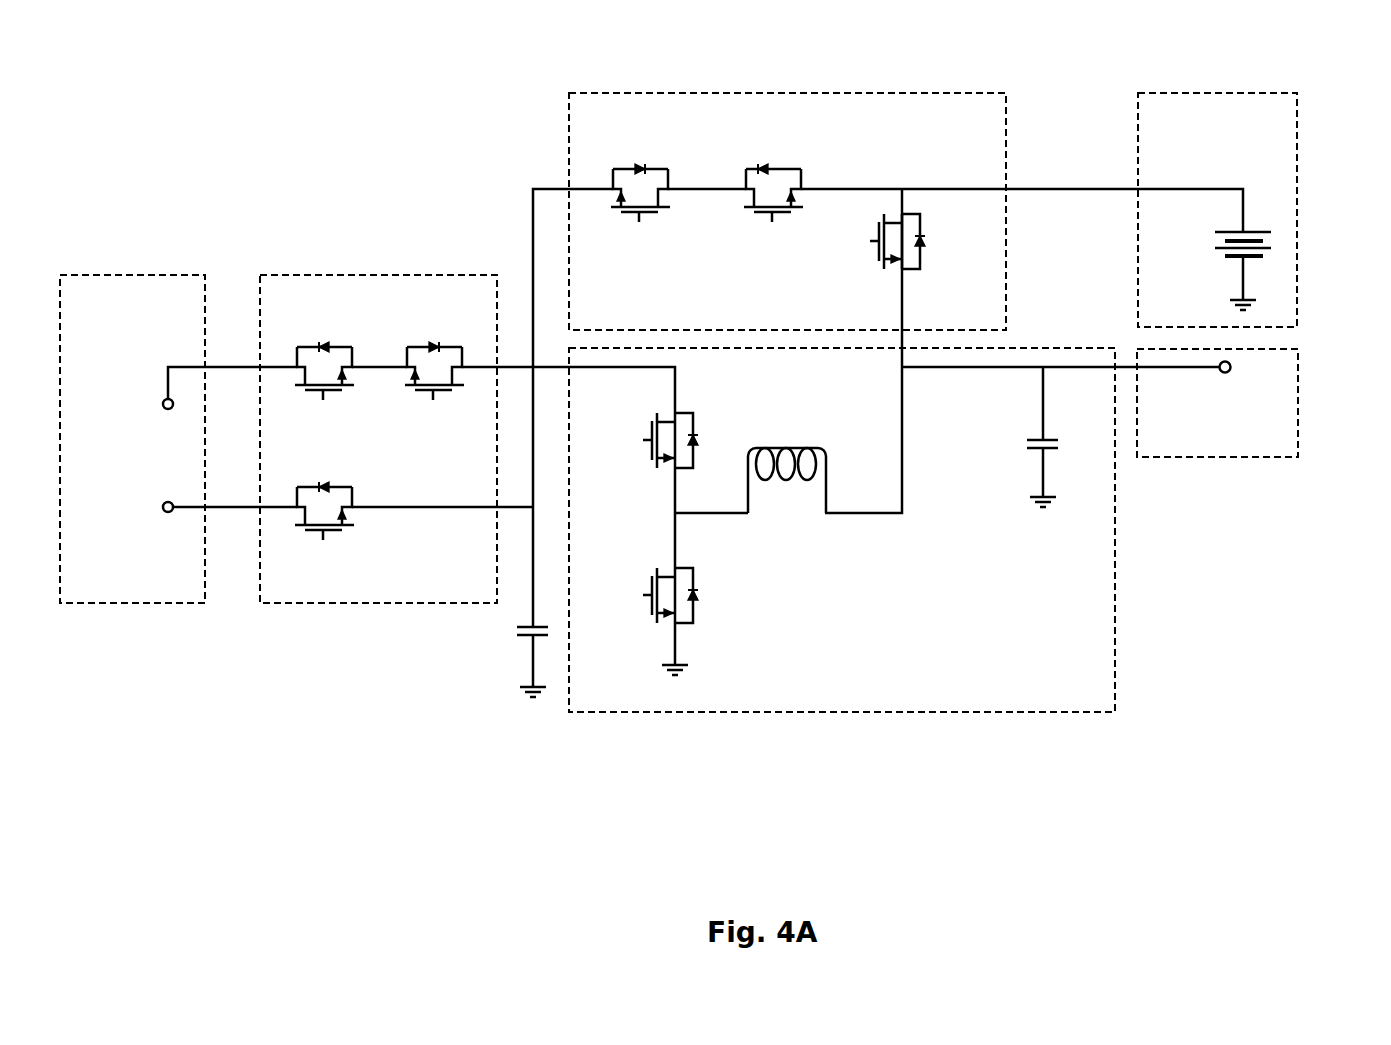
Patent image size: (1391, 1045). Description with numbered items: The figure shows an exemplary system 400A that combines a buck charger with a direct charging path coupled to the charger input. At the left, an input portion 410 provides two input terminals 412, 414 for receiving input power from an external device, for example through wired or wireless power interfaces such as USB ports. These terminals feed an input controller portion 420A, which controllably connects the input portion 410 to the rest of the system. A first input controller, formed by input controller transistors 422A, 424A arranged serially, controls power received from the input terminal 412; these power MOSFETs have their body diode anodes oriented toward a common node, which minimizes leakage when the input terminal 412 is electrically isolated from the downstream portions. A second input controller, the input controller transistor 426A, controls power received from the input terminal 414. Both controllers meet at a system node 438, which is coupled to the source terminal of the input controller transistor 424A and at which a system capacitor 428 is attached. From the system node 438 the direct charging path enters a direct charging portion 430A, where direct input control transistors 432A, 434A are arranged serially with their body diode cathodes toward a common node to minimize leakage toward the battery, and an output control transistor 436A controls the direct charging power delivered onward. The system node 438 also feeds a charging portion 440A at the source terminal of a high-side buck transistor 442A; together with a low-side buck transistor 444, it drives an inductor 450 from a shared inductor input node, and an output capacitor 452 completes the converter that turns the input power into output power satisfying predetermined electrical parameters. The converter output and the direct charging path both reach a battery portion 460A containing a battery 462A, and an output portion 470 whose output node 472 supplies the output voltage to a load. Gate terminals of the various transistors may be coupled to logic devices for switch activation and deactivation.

The system 400A is at (1390, 48).
The input portion 410 is at (153, 597).
The input terminal 412 is at (197, 391).
The input terminal 414 is at (197, 507).
The input controller portion 420A is at (437, 595).
The input controller transistor 422A is at (324, 351).
The input controller transistor 424A is at (434, 351).
The input controller transistor 426A is at (324, 535).
The system capacitor 428 is at (515, 662).
The direct charging portion 430A is at (582, 322).
The direct input control transistor 432A is at (640, 175).
The direct input control transistor 434A is at (773, 175).
The output control transistor 436A is at (922, 241).
The system node 438 is at (520, 188).
The charging portion 440A is at (1055, 702).
The high-side buck transistor 442A is at (640, 440).
The low-side buck transistor 444 is at (644, 621).
The inductor 450 is at (787, 495).
The output capacitor 452 is at (1059, 437).
The battery portion 460A is at (1237, 122).
The battery 462A is at (1215, 271).
The output portion 470 is at (1158, 450).
The output node 472 is at (1225, 388).